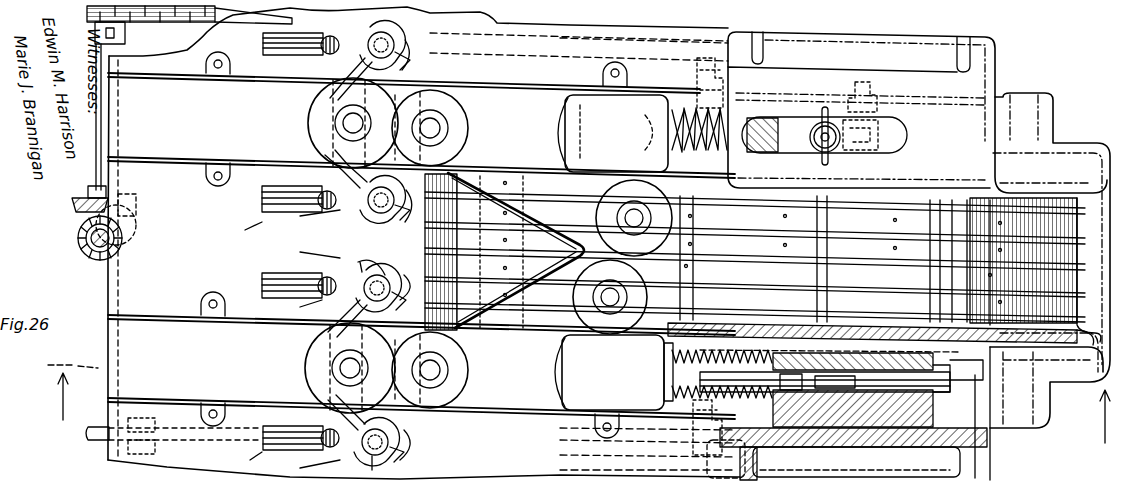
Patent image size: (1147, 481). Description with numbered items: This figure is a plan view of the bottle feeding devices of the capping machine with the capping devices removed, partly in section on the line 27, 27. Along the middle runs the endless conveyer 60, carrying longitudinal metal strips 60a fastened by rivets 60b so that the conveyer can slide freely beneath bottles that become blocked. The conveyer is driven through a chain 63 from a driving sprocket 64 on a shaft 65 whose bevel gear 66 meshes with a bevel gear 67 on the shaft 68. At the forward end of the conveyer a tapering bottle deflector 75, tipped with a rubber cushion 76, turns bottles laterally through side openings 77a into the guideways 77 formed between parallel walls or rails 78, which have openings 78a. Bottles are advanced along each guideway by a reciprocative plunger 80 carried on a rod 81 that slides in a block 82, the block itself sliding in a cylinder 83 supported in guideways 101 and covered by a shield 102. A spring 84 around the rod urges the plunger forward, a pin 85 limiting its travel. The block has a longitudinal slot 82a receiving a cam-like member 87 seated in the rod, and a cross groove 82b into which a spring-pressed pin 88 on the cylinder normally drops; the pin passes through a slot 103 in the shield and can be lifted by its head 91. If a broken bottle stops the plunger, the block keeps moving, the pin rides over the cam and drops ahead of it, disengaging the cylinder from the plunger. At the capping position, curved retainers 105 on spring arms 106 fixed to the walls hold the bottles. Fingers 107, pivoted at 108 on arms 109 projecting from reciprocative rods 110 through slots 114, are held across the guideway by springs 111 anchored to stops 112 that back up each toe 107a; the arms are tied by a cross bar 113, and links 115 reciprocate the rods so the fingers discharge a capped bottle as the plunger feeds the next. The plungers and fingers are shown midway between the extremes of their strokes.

The section line 27 is at (578, 395).
The endless conveyer 60 is at (878, 260).
The longitudinal metal strips 60a is at (883, 272).
The rivets 60b is at (904, 292).
The chain 63 is at (205, 28).
The driving sprocket 64 is at (85, 13).
The shaft 65 is at (94, 166).
The bevel gear 66 is at (70, 200).
The bevel gear 67 is at (77, 236).
The shaft 68 is at (128, 228).
The bottle deflector 75 is at (545, 234).
The cushion 76 is at (572, 232).
The guideways 77 is at (470, 130).
The side openings 77a is at (638, 298).
The walls or rails 78 is at (247, 320).
The openings 78a is at (250, 378).
The reciprocative plunger 80 is at (611, 252).
The rod 81 is at (664, 362).
The block 82 is at (930, 420).
The longitudinal slot or groove 82a is at (815, 335).
The recess or cross groove 82b is at (845, 337).
The cylinder 83 is at (883, 437).
The spring 84 is at (722, 256).
The pin 85 is at (960, 392).
The cam-like member 87 is at (780, 372).
The pin 88 is at (825, 93).
The projection or head 91 is at (844, 93).
The guideways 101 is at (986, 350).
The shield 102 is at (919, 230).
The slot 103 is at (900, 150).
The retainers 105 is at (320, 385).
The spring arms 106 is at (245, 427).
The fingers 107 is at (400, 345).
The toe 107a is at (415, 458).
The pivot 108 is at (363, 260).
The arms 109 is at (293, 309).
The reciprocative rods 110 is at (290, 441).
The springs 111 is at (315, 345).
The stops 112 is at (391, 468).
The cross bar 113 is at (312, 286).
The slots 114 is at (244, 347).
The links 115 is at (628, 434).